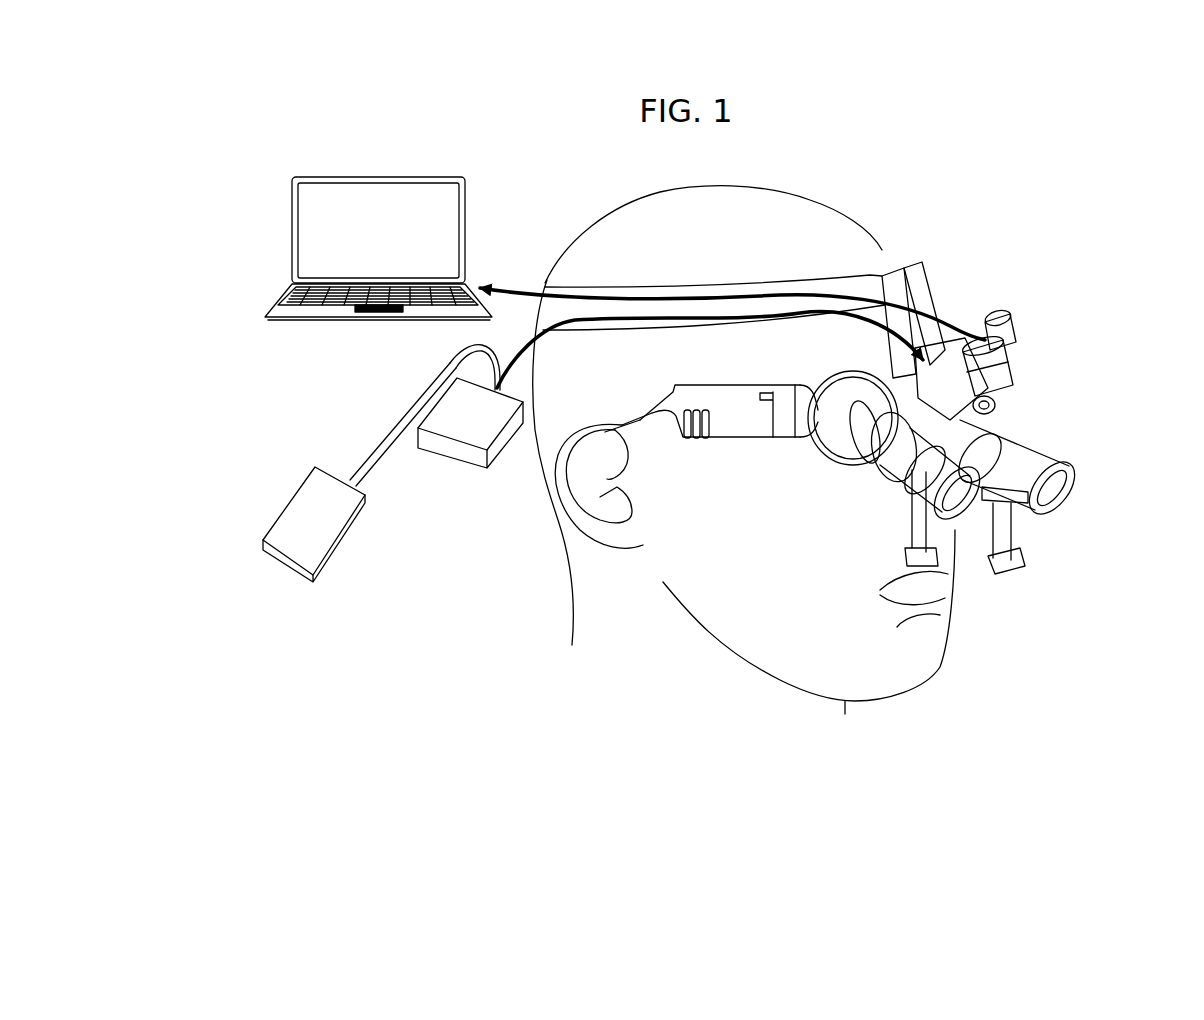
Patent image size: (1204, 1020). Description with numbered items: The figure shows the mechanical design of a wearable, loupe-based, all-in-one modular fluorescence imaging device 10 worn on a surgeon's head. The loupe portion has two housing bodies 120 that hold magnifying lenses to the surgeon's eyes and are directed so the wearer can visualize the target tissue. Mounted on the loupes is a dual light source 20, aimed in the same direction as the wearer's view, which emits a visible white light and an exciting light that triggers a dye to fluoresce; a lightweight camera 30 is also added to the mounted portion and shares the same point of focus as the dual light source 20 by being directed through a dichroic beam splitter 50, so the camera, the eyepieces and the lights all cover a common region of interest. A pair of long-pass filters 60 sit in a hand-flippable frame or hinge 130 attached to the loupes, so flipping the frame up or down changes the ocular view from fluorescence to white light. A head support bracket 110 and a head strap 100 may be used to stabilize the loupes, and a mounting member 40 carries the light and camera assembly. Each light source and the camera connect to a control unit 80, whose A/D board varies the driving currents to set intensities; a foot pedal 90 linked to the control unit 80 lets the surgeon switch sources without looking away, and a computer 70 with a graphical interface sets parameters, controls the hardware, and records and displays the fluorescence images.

The head-mounted loupe system 10 is at (995, 596).
The dual light source 20 is at (943, 352).
The camera 30 is at (1012, 344).
The cylindrical housing 40 is at (1010, 372).
The beam splitter 50 is at (1002, 405).
The long-pass filter 60 is at (1081, 486).
The computer 70 is at (398, 180).
The control unit 80 is at (459, 470).
The foot pedal 90 is at (278, 563).
The head strap 100 is at (924, 296).
The head support bracket 110 is at (892, 272).
The housing body 120 is at (892, 494).
The hinge 130 is at (1025, 566).